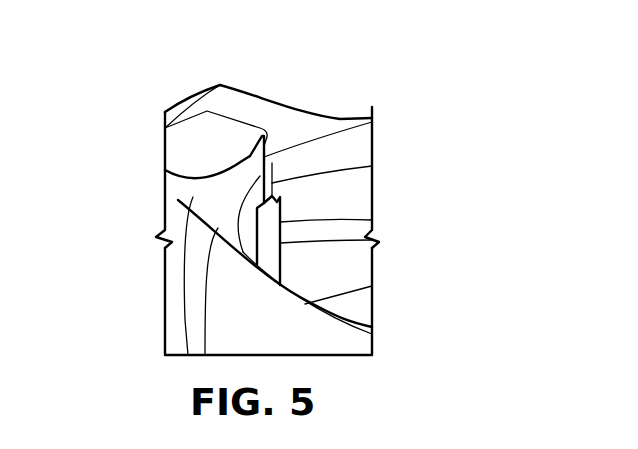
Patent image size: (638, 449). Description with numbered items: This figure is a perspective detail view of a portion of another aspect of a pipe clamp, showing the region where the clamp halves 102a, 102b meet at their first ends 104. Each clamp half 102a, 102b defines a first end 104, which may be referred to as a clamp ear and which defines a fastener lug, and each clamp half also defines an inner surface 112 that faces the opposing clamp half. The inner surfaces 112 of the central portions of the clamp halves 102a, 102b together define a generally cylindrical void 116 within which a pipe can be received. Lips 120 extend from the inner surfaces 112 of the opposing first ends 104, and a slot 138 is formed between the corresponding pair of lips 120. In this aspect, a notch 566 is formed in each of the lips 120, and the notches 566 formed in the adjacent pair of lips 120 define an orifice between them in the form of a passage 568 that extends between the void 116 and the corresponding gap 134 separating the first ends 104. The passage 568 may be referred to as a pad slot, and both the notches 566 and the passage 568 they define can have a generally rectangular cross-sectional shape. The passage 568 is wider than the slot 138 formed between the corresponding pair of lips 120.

The clamp half 102a is at (322, 100).
The clamp half 102b is at (142, 282).
The first end 104 is at (240, 108).
The inner surface 112 is at (348, 270).
The void 116 is at (370, 305).
The lip 120 is at (372, 166).
The gap 134 is at (190, 143).
The slot 138 is at (240, 155).
The notch 566 is at (372, 222).
The passage 568 is at (265, 247).